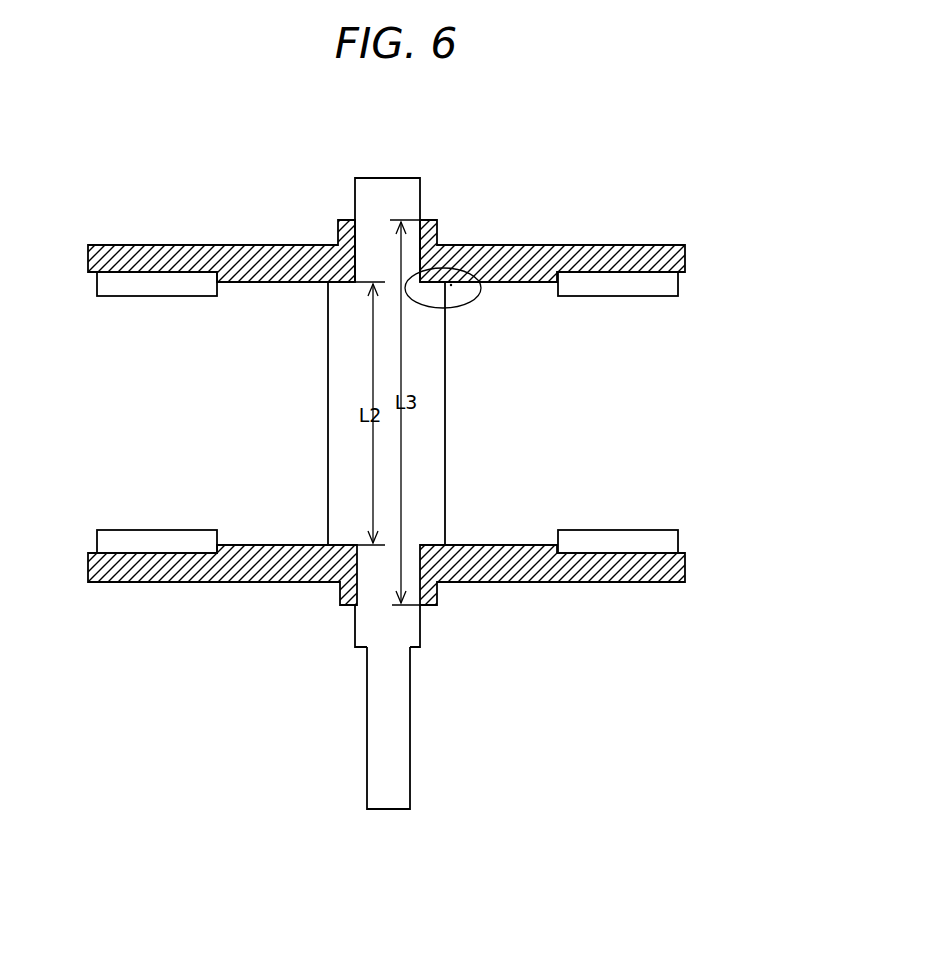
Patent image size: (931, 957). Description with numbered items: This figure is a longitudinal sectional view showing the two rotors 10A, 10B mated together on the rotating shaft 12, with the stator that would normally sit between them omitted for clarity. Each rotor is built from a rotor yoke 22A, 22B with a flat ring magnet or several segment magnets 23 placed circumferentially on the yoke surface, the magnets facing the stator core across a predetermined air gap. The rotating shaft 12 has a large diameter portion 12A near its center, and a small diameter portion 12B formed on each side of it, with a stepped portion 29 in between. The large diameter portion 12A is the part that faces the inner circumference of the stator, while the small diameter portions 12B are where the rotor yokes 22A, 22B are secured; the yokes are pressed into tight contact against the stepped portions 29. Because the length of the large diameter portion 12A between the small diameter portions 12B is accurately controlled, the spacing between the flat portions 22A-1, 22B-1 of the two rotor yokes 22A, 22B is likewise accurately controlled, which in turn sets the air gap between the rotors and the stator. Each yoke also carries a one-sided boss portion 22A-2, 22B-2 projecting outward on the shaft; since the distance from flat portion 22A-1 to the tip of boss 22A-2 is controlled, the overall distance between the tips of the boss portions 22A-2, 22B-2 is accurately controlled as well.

The rotor 10A is at (433, 568).
The rotor 10B is at (433, 269).
The rotating shaft 12 is at (387, 462).
The large diameter portion 12A is at (320, 283).
The small diameter portion 12B is at (390, 193).
The rotor yoke 22A is at (386, 568).
The flat portion 22A-1 is at (260, 545).
The one-sided boss portion 22A-2 is at (340, 592).
The rotor yoke 22B is at (386, 269).
The flat portion 22B-1 is at (267, 283).
The one-sided boss portion 22B-2 is at (437, 228).
The magnet 23 is at (142, 288).
The stepped portion 29 is at (427, 283).